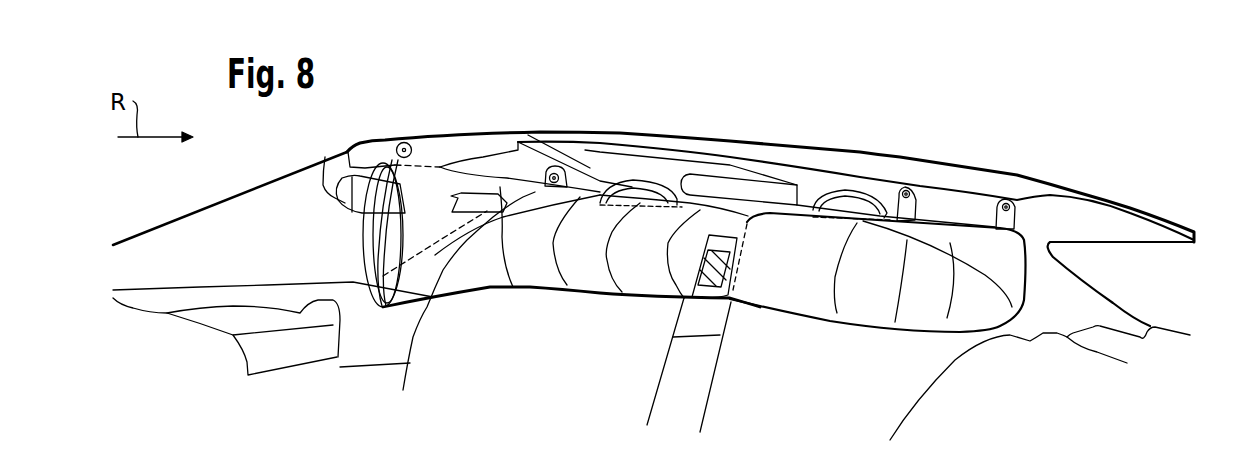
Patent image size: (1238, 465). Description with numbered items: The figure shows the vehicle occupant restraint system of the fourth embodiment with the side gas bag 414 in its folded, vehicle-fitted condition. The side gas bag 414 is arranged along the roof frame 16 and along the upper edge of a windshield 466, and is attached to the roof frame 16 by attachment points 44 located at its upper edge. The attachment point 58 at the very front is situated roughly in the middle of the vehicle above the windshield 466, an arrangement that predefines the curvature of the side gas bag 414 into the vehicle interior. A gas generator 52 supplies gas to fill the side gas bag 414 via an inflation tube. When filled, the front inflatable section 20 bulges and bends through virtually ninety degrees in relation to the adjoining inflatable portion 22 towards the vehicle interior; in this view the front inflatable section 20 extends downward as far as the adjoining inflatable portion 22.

The roof frame 16 is at (853, 164).
The front inflatable section 20 is at (447, 262).
The adjoining inflatable portion 22 is at (633, 260).
The attachment points 44 is at (556, 177).
The gas generator 52 is at (758, 188).
The attachment point 58 is at (408, 144).
The side gas bag 414 is at (792, 292).
The windshield 466 is at (220, 197).